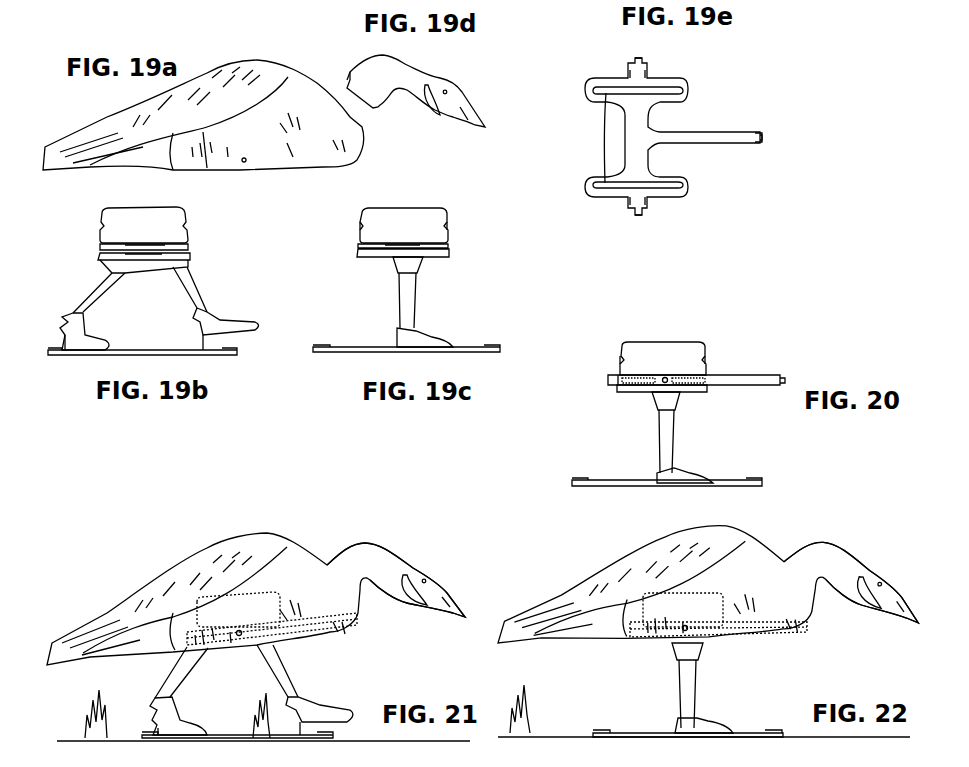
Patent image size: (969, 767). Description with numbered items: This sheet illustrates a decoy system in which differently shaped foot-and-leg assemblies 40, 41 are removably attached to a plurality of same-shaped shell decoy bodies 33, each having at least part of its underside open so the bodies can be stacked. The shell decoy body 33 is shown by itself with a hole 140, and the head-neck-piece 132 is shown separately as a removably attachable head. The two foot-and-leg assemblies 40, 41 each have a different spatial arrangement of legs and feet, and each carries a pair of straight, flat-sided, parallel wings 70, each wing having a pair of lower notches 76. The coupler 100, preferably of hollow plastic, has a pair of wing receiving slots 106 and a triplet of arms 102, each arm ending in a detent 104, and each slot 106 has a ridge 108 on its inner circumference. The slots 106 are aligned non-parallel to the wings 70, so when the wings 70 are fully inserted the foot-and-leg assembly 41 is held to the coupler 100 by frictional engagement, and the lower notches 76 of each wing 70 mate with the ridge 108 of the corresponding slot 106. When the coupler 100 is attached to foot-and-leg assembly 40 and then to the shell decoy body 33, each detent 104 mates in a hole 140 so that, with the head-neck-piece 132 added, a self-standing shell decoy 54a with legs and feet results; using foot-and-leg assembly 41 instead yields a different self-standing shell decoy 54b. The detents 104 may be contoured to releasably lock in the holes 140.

In FIG. 19A, the shell decoy body 33 is at (270, 44).
In FIG. 21, the shell decoy body 33 is at (304, 532).
In FIG. 22, the shell decoy body 33 is at (761, 540).
In FIG. 19A, the hole 140 is at (246, 162).
In FIG. 19D, the head-neck-piece 132 is at (457, 73).
In FIG. 21, the head-neck-piece 132 is at (428, 562).
In FIG. 22, the head-neck-piece 132 is at (843, 560).
In FIG. 19E, the coupler 100 is at (753, 105).
In FIG. 20, the coupler 100 is at (755, 396).
In FIG. 21, the coupler 100 is at (350, 635).
In FIG. 22, the coupler 100 is at (792, 645).
In FIG. 19E, the arm 102 is at (640, 75).
In FIG. 19E, the detent 104 is at (635, 60).
In FIG. 20, the detent 104 is at (783, 378).
In FIG. 21, the detent 104 is at (363, 617).
In FIG. 22, the detent 104 is at (808, 628).
In FIG. 19E, the wing receiving slot 106 is at (607, 139).
In FIG. 19E, the ridge 108 is at (683, 90).
In FIG. 20, the ridge 108 is at (710, 378).
In FIG. 19B, the foot-and-leg assembly 40 is at (203, 249).
In FIG. 21, the foot-and-leg assembly 40 is at (169, 672).
In FIG. 19C, the foot-and-leg assembly 41 is at (368, 304).
In FIG. 20, the foot-and-leg assembly 41 is at (600, 447).
In FIG. 22, the foot-and-leg assembly 41 is at (644, 677).
In FIG. 19C, the lower notch 76 is at (360, 245).
In FIG. 20, the lower notch 76 is at (622, 373).
In FIG. 20, the wing 70 is at (647, 363).
In FIG. 21, the self-standing shell decoy 54a is at (165, 530).
In FIG. 22, the self-standing shell decoy 54b is at (580, 572).